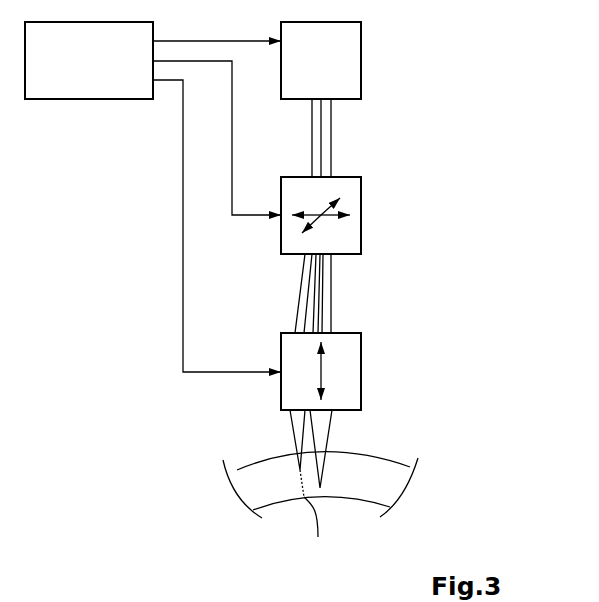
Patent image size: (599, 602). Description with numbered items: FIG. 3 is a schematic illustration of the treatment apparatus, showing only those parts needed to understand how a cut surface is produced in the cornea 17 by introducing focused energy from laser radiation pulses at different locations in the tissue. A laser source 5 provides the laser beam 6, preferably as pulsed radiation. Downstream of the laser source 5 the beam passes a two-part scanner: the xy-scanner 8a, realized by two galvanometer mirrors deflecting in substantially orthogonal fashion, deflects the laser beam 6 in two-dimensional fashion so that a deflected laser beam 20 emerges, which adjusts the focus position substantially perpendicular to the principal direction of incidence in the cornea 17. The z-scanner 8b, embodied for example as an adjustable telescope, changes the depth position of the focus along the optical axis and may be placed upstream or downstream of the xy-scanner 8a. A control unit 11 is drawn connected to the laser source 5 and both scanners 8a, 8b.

The control unit 11 is at (100, 100).
The laser source 5 is at (361, 57).
The laser beam 6 is at (331, 133).
The xy-scanner 8a is at (361, 222).
The deflected laser beam 20 is at (323, 293).
The z-scanner 8b is at (361, 381).
The cornea 17 is at (395, 463).